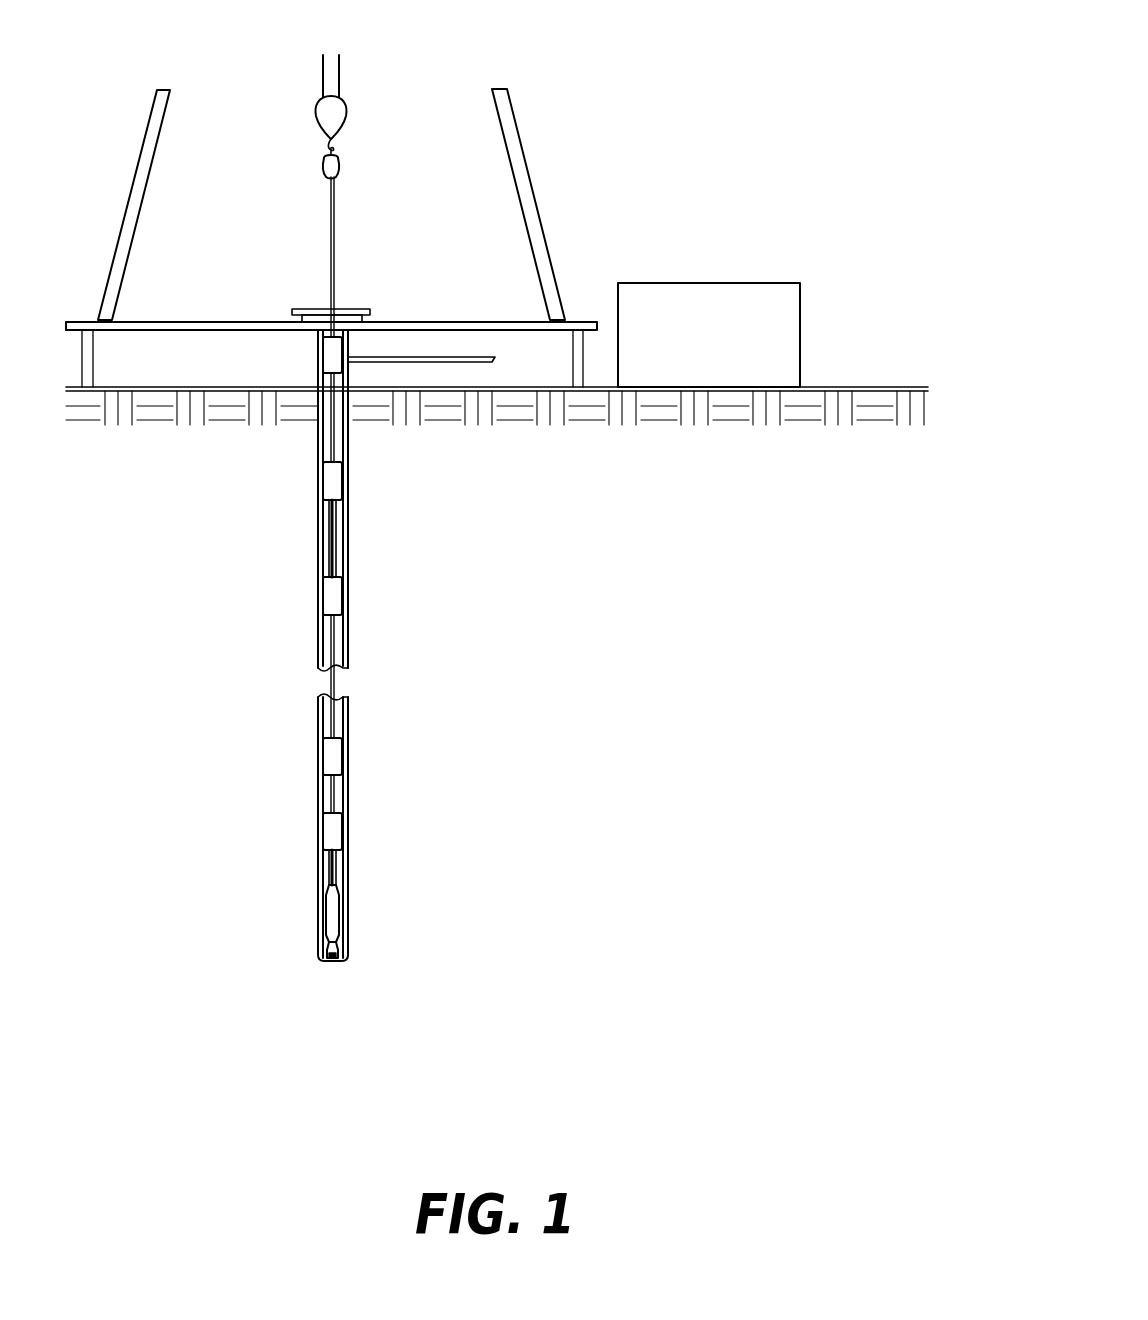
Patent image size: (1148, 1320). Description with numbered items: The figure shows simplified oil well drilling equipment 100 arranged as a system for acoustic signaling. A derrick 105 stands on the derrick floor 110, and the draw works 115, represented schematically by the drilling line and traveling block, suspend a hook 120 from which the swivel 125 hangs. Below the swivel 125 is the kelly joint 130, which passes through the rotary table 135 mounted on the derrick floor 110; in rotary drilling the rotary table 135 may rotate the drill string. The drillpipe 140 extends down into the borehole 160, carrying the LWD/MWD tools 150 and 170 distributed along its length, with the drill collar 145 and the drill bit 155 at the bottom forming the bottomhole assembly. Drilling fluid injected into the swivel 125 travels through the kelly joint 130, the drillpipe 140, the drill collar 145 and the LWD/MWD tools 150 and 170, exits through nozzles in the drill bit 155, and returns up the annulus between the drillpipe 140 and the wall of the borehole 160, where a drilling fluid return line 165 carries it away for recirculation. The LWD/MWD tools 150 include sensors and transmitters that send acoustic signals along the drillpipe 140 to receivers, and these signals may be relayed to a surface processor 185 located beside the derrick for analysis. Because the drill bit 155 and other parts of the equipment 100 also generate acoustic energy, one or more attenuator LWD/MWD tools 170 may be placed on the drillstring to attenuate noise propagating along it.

The oil well drilling equipment 100 is at (802, 44).
The derrick 105 is at (528, 203).
The derrick floor 110 is at (395, 327).
The draw works 115 is at (340, 75).
The hook 120 is at (336, 146).
The swivel 125 is at (324, 165).
The kelly joint 130 is at (336, 240).
The rotary table 135 is at (296, 311).
The drillpipe 140 is at (326, 440).
The drill collar 145 is at (326, 905).
The LWD/MWD tools 150 is at (320, 352).
The drill bit 155 is at (318, 953).
The borehole 160 is at (320, 768).
The drilling fluid return line 165 is at (460, 360).
The LWD/MWD tools 170 is at (322, 481).
The surface processor 185 is at (758, 283).